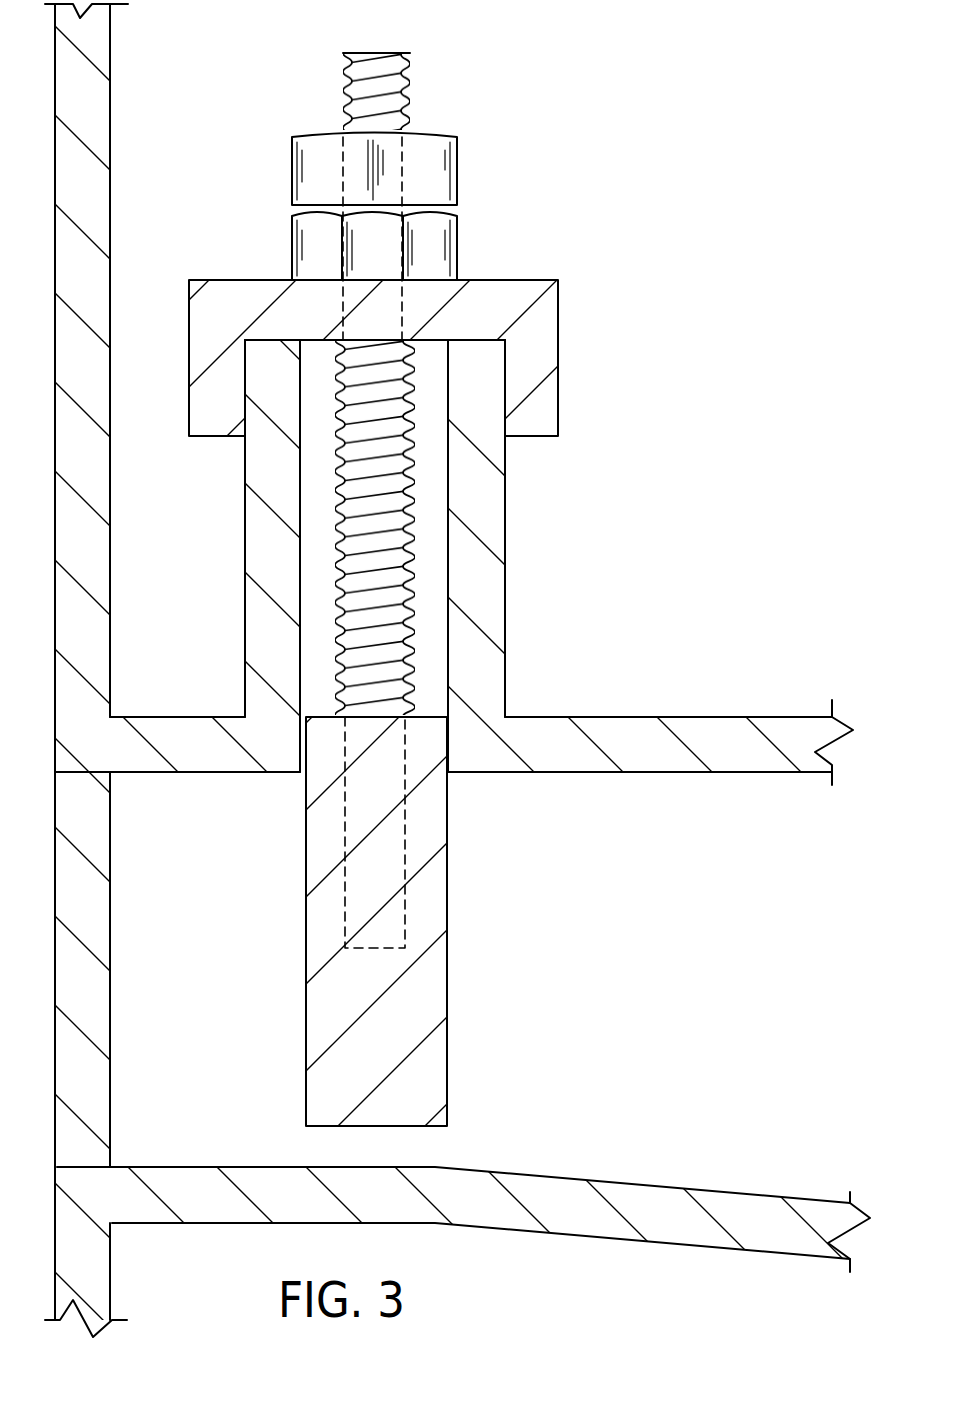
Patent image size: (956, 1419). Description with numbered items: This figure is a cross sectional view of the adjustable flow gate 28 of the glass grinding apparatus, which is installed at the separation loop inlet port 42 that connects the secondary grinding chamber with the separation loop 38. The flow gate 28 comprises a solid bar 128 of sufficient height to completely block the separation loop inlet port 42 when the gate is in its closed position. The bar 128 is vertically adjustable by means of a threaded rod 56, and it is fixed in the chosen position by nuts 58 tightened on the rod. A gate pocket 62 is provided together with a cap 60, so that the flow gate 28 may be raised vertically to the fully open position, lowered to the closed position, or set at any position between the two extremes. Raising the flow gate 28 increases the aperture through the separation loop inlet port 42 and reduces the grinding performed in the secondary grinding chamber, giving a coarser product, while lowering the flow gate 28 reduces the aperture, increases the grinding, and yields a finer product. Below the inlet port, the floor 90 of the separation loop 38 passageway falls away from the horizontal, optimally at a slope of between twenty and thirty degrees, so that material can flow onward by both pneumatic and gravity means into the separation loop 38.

The adjustable flow gate 28 is at (542, 485).
The separation loop 38 is at (668, 976).
The separation loop inlet port 42 is at (187, 976).
The threaded rod 56 is at (410, 76).
The nuts 58 is at (458, 211).
The cap 60 is at (538, 280).
The gate pocket 62 is at (413, 523).
The floor 90 is at (648, 1184).
The solid bar 128 is at (428, 1020).